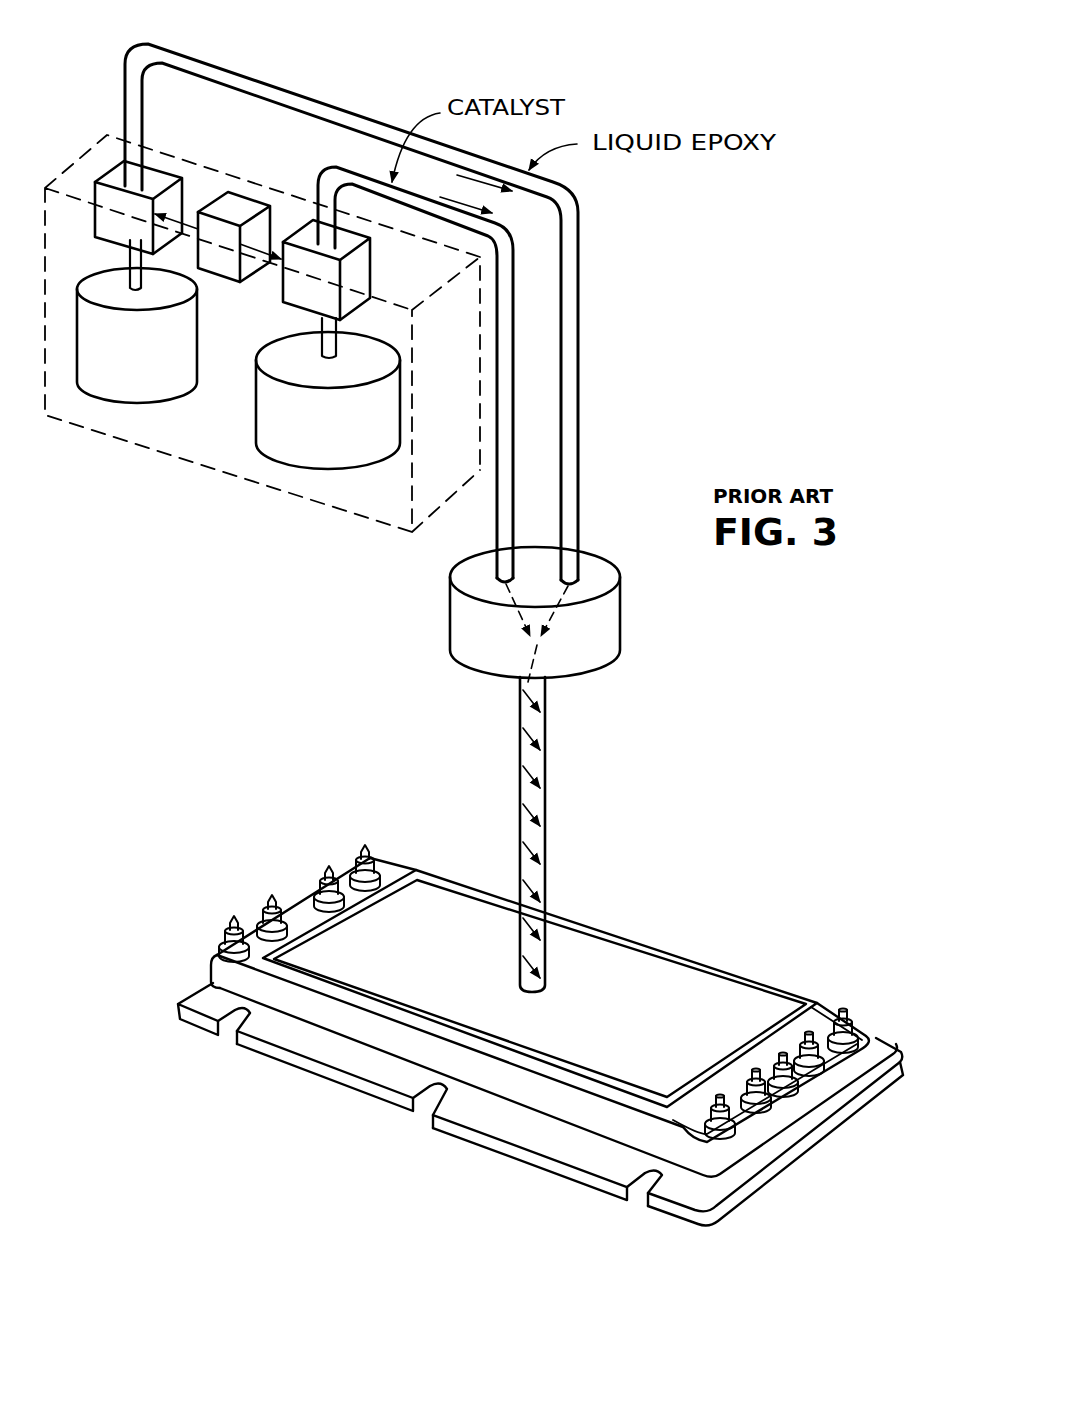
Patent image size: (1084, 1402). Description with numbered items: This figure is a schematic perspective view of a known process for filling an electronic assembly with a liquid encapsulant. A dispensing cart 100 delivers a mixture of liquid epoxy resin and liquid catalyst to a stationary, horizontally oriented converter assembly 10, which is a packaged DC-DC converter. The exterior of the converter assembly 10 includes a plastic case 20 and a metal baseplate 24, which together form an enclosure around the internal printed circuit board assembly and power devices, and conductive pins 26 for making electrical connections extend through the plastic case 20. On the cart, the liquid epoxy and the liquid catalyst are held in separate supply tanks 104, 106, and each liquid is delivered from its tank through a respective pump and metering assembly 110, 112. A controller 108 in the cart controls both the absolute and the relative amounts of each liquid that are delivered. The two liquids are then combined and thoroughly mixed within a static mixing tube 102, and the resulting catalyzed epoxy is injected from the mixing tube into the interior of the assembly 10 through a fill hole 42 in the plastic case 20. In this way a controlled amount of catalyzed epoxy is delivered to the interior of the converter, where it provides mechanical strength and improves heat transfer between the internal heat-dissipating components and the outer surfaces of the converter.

The converter assembly 10 is at (540, 1029).
The plastic case 20 is at (775, 1128).
The metal baseplate 24 is at (607, 1155).
The conductive pins 26 is at (364, 852).
The fill hole 42 is at (558, 988).
The dispensing cart 100 is at (388, 531).
The static mixing tube 102 is at (542, 768).
The supply tank 104 is at (165, 385).
The supply tank 106 is at (343, 452).
The controller 108 is at (243, 210).
The pump and metering assembly 110 is at (158, 190).
The pump and metering assembly 112 is at (360, 280).